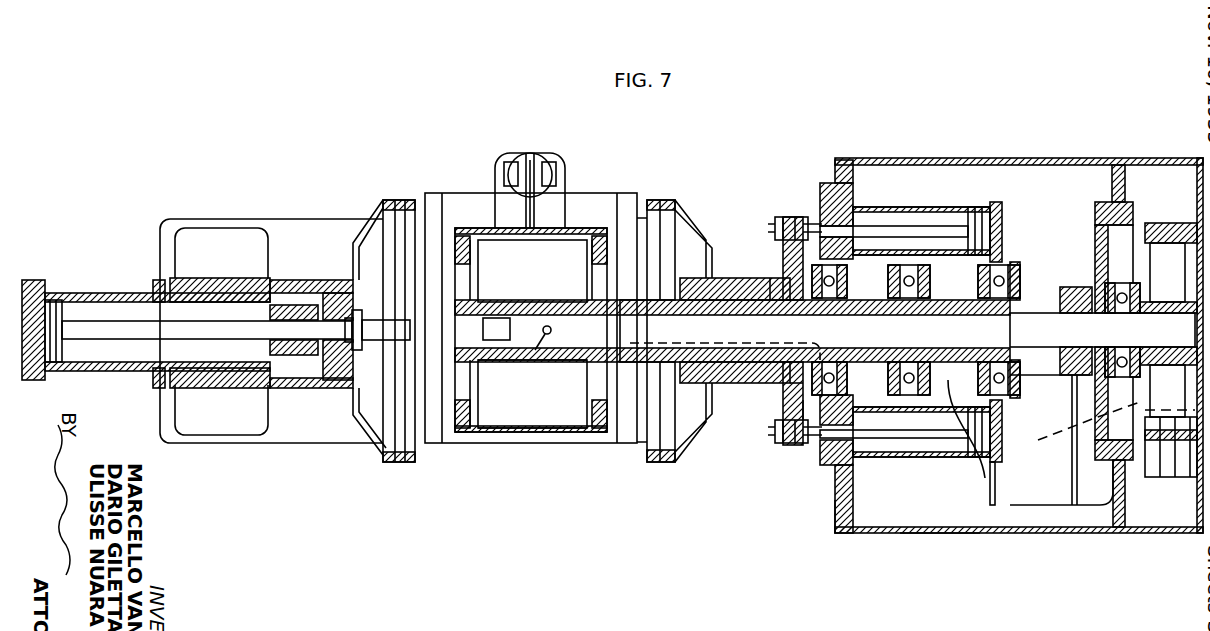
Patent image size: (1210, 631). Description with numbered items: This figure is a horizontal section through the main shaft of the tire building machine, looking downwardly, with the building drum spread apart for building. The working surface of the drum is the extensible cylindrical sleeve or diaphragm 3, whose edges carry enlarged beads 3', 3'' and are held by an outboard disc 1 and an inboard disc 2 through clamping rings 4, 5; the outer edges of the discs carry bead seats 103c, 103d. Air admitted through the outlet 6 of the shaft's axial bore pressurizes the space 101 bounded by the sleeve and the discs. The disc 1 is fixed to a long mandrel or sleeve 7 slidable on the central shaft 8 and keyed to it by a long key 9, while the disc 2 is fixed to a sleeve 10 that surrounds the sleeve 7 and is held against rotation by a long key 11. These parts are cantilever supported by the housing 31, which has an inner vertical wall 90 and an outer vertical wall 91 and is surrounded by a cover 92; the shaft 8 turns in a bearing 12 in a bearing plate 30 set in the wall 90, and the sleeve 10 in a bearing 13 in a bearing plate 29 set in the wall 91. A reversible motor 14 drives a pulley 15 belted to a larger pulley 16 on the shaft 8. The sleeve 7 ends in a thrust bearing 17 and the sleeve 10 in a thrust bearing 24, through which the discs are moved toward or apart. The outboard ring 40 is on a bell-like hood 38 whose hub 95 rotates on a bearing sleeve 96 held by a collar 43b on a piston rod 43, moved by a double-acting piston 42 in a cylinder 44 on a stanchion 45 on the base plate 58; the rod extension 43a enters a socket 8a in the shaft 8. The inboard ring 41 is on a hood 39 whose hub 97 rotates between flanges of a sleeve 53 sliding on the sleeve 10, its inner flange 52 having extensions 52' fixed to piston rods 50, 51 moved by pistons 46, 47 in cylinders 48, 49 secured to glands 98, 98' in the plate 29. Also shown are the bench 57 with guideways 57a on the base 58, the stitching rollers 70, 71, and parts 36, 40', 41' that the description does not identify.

The outboard disc 1 is at (474, 292).
The inboard disc 2 is at (598, 381).
The cylindrical sleeve or diaphragm 3 is at (532, 456).
The enlarged rib or bead 3' is at (446, 483).
The enlarged rib or bead 3'' is at (585, 481).
The clamping ring 4 is at (472, 418).
The clamping ring 5 is at (531, 330).
The outlet 6 is at (545, 337).
The cylindrical mandrel or sleeve 7 is at (538, 318).
The main or central shaft 8 is at (1035, 318).
The socket 8a is at (500, 316).
The long key 9 is at (757, 347).
The mandrel or sleeve 10 is at (600, 300).
The long key 11 is at (775, 302).
The bearing 12 is at (1108, 290).
The bearing 13 is at (798, 437).
The reversible variable speed motor 14 is at (1040, 533).
The pulley 15 is at (1102, 431).
The larger pulley 16 is at (1172, 243).
The thrust bearing 17 is at (1014, 275).
The thrust bearing 24 is at (918, 290).
The bearing plate 29 is at (826, 183).
The bearing plate 30 is at (1098, 218).
The housing 31 is at (1058, 178).
The spacer 36 is at (1072, 292).
The bell-like hood 38 is at (378, 215).
The hood 39 is at (708, 228).
The outboard ring 40 is at (408, 310).
The hub flange 40' is at (399, 296).
The inboard ring 41 is at (649, 311).
The ring flange 41' is at (668, 308).
The piston 42 is at (58, 305).
The piston rod 43 is at (248, 335).
The extension 43a is at (395, 340).
The collar 43b is at (358, 395).
The cylinder 44 is at (122, 372).
The stanchion 45 is at (233, 280).
The piston 46 is at (980, 215).
The piston 47 is at (975, 455).
The cylinder 48 is at (885, 207).
The cylinder 49 is at (915, 457).
The piston rod 50 is at (940, 230).
The piston rod 51 is at (897, 438).
The inner flange 52 is at (773, 415).
The extensions 52' is at (795, 338).
The sleeve 53 is at (718, 282).
The bench 57 is at (640, 432).
The guideways 57a is at (452, 195).
The base plate 58 is at (283, 228).
The stitching roller 70 is at (527, 155).
The stitching roller 71 is at (537, 158).
The inner vertical wall 90 is at (1125, 505).
The outer vertical wall 91 is at (838, 505).
The cover 92 is at (935, 533).
The hub 95 is at (303, 388).
The bearing sleeve 96 is at (295, 283).
The hub 97 is at (748, 278).
The gland 98 is at (846, 238).
The gland 98' is at (820, 440).
The space or chamber 101 is at (518, 418).
The bead seat 103c is at (465, 420).
The bead seat 103d is at (600, 425).